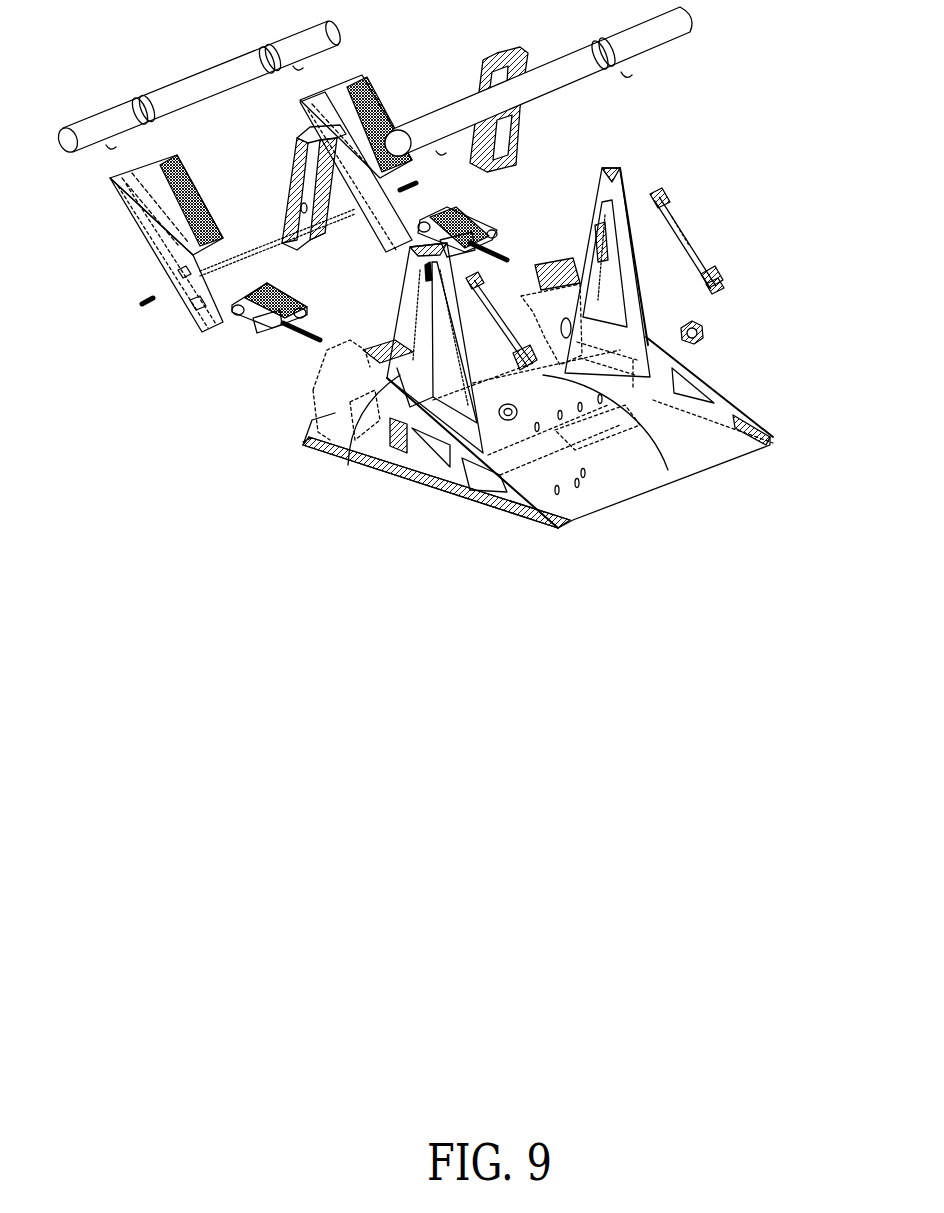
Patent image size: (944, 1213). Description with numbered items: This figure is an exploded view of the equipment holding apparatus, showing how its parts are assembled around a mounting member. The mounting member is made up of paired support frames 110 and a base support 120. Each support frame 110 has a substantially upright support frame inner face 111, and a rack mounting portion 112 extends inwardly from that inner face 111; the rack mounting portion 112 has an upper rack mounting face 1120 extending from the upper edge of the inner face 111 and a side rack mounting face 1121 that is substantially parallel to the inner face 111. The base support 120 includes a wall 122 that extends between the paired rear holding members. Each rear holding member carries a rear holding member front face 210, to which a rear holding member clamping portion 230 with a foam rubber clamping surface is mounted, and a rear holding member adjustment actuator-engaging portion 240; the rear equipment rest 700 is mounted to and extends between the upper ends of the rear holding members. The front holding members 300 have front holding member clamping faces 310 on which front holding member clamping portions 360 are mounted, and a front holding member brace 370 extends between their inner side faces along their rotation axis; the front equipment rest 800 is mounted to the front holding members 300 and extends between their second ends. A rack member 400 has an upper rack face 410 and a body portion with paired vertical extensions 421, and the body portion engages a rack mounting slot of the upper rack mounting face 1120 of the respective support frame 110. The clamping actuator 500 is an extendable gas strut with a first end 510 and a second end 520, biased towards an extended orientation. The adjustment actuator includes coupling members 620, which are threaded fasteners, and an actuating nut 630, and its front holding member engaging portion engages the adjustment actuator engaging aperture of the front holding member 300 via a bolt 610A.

The front equipment rest 800 is at (207, 70).
The rear equipment rest 700 is at (573, 57).
The rear holding member clamping portion 230 is at (292, 197).
The front holding member clamping portion 360 is at (177, 200).
The front holding member 300 is at (146, 243).
The front holding member clamping face 310 is at (173, 267).
The front holding member brace 370 is at (251, 253).
The bolt 610A is at (138, 305).
The rack member 400 is at (376, 283).
The upper rack face 410 is at (258, 308).
The vertical extension 421 is at (267, 332).
The coupling member 620 is at (304, 334).
The rear holding member front face 210 is at (400, 323).
The rack mounting portion 112 is at (550, 263).
The upper rack mounting face 1120 is at (561, 260).
The side rack mounting face 1121 is at (547, 287).
The clamping actuator 500 is at (712, 228).
The first end 510 is at (658, 192).
The second end 520 is at (724, 287).
The actuating nut 630 is at (709, 337).
The support frame 110 is at (513, 503).
The base support 120 is at (616, 474).
The support frame inner face 111 is at (730, 418).
The rear holding member adjustment actuator-engaging portion 240 is at (348, 468).
The wall 122 is at (663, 463).